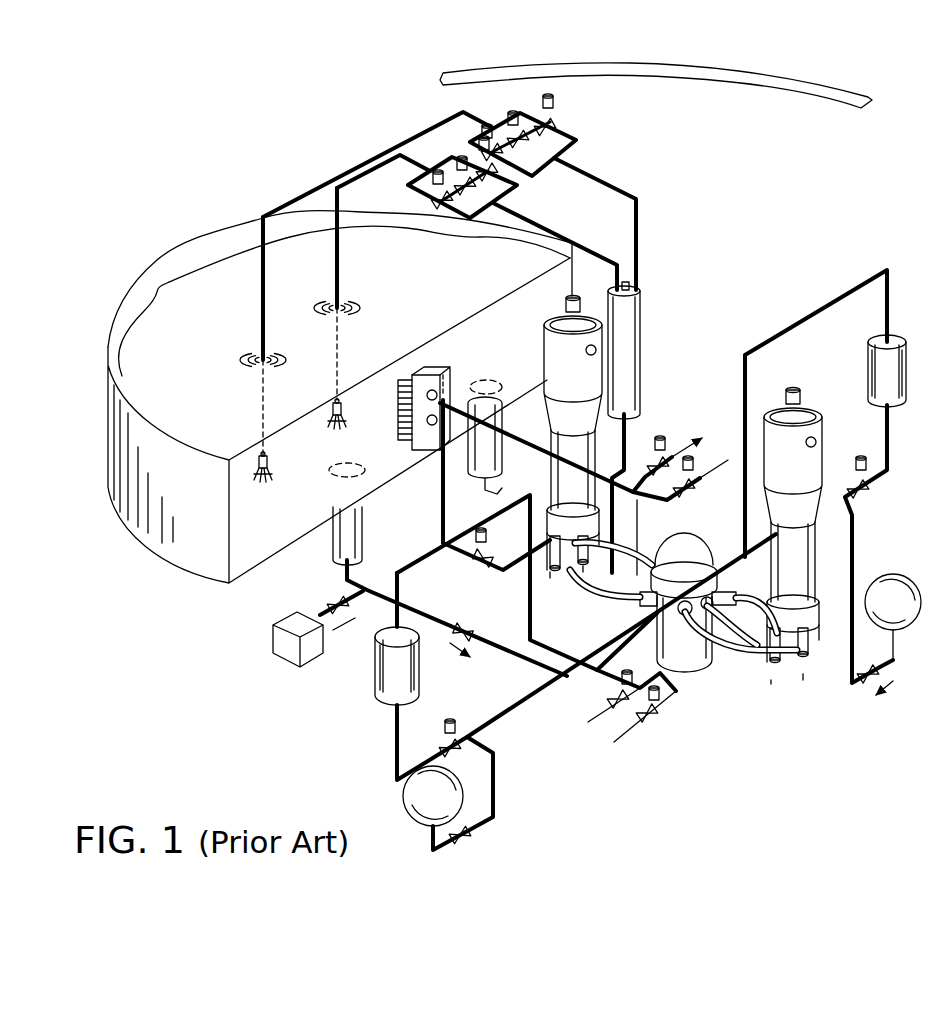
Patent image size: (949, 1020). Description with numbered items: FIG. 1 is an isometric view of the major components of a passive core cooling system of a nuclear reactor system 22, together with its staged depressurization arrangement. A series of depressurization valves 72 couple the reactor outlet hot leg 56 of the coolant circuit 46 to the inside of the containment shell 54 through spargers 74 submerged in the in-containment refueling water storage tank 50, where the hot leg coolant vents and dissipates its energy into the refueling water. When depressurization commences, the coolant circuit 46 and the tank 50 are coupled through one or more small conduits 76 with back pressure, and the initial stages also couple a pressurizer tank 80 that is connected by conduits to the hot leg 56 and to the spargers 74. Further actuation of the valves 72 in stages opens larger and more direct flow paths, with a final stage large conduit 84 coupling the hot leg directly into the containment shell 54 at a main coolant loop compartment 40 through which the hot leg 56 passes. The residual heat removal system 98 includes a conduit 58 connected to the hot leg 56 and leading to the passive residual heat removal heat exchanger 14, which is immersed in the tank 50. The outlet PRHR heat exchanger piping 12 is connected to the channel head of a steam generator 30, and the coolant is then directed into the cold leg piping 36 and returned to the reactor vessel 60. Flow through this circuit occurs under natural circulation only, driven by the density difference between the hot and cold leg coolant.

The outlet PRHR heat exchanger piping 12 is at (437, 470).
The passive residual heat removal heat exchanger 14 is at (440, 368).
The nuclear reactor system 22 is at (672, 390).
The steam generator 30 is at (813, 400).
The cold leg piping 36 is at (733, 652).
The main coolant loop compartment 40 is at (561, 782).
The coolant circuit 46 is at (752, 664).
The in-containment refueling water storage tank 50 is at (168, 266).
The containment shell 54 is at (820, 84).
The reactor outlet hot leg 56 is at (796, 582).
The conduit 58 is at (543, 445).
The reactor vessel 60 is at (685, 675).
The depressurization valves 72 is at (580, 131).
The spargers 74 is at (254, 477).
The small conduits 76 is at (577, 142).
The pressurizer tank 80 is at (648, 312).
The large conduit 84 is at (671, 494).
The residual heat removal system 98 is at (437, 500).